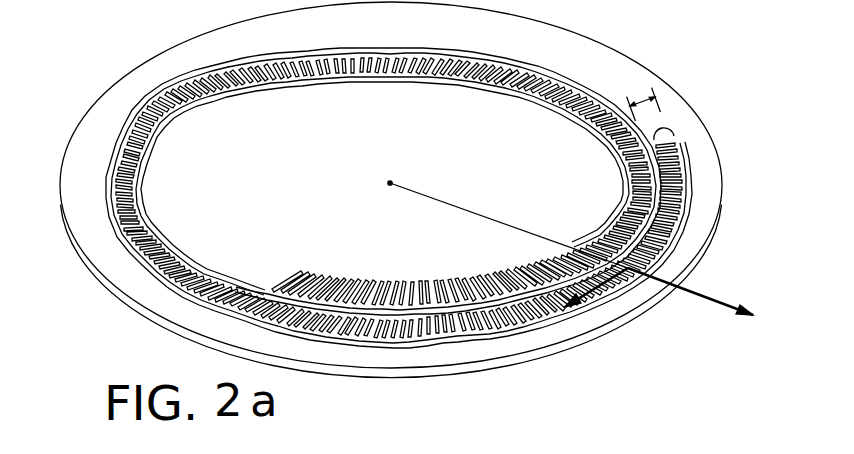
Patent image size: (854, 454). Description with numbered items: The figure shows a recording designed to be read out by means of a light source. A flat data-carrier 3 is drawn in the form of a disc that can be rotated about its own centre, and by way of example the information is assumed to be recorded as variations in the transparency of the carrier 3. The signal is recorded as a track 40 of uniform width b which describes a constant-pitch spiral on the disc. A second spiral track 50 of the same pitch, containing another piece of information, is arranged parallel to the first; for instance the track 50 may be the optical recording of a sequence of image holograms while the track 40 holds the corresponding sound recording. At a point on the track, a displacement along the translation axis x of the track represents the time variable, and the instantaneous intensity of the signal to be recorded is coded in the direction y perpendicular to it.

The flat data-carrier 3 is at (613, 47).
The track 40 is at (660, 157).
The spiral track 50 is at (687, 168).
The width of the track b is at (635, 97).
The translation axis x is at (626, 299).
The direction perpendicular to the translation axis y is at (735, 262).